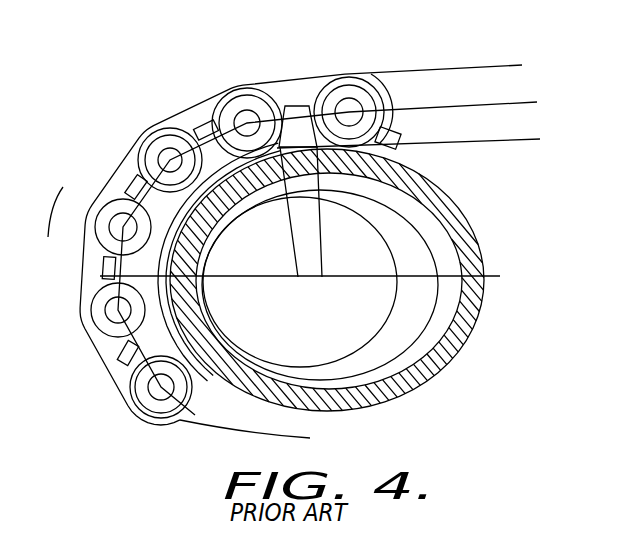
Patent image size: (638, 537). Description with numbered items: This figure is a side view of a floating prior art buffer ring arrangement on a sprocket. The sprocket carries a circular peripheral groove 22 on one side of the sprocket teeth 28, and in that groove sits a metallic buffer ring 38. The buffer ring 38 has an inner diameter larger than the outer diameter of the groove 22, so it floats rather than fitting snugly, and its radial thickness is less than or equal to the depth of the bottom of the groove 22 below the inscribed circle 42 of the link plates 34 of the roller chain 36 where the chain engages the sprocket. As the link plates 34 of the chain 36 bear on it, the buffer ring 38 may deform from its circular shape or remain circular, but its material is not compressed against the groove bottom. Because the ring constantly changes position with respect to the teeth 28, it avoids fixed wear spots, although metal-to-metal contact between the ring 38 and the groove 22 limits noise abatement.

The circular peripheral groove 22 is at (372, 218).
The sprocket teeth 28 is at (293, 106).
The link plates 34 is at (265, 90).
The chain 36 is at (345, 75).
The metallic buffer ring 38 is at (472, 232).
The inscribed circle 42 is at (430, 315).